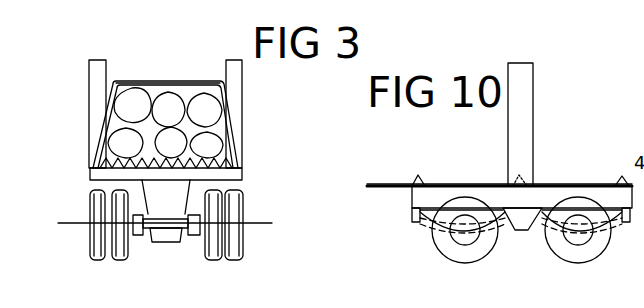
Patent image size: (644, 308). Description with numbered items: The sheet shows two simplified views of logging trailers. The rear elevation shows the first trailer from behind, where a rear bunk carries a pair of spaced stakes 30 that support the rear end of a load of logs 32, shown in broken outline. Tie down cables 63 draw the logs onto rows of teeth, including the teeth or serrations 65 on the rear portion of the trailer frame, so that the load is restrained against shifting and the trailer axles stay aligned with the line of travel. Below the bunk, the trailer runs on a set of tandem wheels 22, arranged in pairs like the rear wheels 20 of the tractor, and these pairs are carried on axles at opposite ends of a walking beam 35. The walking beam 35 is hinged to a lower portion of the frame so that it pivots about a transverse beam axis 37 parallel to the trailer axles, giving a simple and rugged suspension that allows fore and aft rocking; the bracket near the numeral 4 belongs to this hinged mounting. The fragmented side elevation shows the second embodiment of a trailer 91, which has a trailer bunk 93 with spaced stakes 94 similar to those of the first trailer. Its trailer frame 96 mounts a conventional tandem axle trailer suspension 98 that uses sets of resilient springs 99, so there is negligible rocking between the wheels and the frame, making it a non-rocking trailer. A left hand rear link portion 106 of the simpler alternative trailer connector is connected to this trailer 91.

In FIG. 3, the rear wheels 20 is at (230, 173).
In FIG. 3, the tandem wheels 22 is at (100, 260).
In FIG. 3, the stakes 30 is at (98, 98).
In FIG. 3, the load of logs 32 is at (163, 85).
In FIG. 3, the walking beam 35 is at (140, 237).
In FIG. 3, the transverse beam axis 37 is at (260, 227).
In FIG. 3, the suspension bracket 4 is at (172, 242).
In FIG. 3, the tie down cables 63 is at (152, 86).
In FIG. 3, the teeth or serrations 65 is at (188, 157).
In FIG. 10, the trailer 91 is at (383, 208).
In FIG. 10, the trailer bunk 93 is at (525, 175).
In FIG. 10, the stakes 94 is at (518, 113).
In FIG. 10, the trailer frame 96 is at (533, 200).
In FIG. 10, the tandem axle trailer suspension 98 is at (413, 227).
In FIG. 10, the resilient springs 99 is at (540, 218).
In FIG. 10, the left hand rear link portion 106 is at (398, 186).